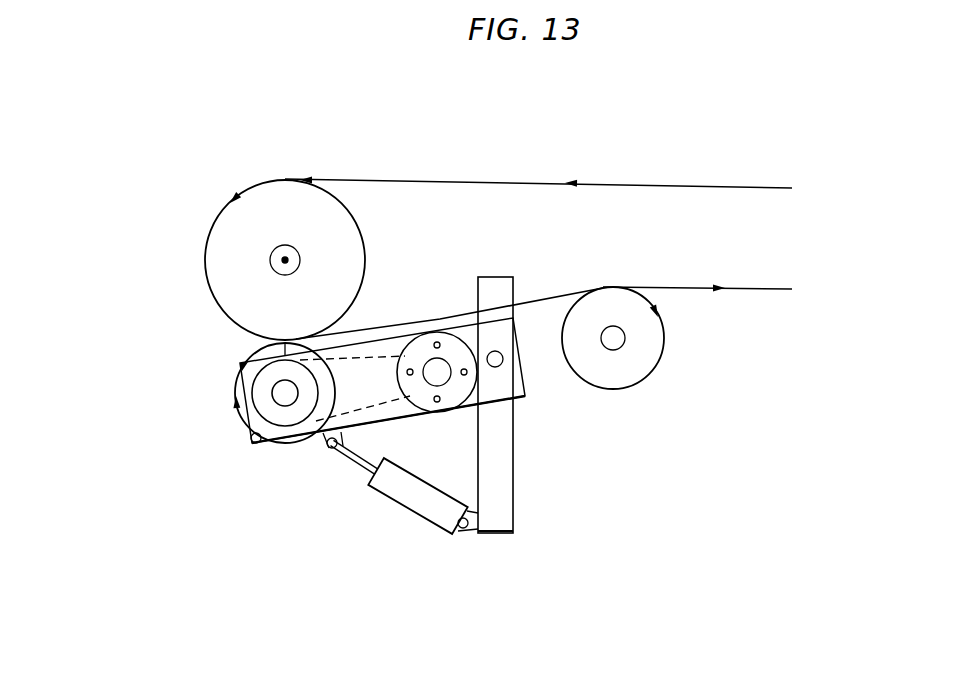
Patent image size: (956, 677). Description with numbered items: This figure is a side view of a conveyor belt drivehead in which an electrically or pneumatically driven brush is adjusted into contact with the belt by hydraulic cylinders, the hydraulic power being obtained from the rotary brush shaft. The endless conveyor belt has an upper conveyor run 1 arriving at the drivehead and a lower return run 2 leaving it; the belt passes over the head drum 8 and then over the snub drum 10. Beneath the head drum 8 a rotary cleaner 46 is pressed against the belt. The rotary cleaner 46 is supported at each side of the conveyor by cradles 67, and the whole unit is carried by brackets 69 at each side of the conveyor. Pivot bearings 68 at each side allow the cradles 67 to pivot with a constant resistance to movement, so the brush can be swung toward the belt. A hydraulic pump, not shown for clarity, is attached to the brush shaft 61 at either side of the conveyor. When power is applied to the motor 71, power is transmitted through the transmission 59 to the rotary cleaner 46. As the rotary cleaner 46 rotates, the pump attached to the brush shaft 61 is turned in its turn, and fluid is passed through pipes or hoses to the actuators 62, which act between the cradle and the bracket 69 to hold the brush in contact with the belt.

The upper conveyor run 1 is at (631, 178).
The lower return run 2 is at (755, 293).
The head drum 8 is at (205, 245).
The snub drum 10 is at (643, 373).
The rotary cleaner 46 is at (288, 448).
The transmission 59 is at (370, 352).
The brush shaft 61 is at (272, 391).
The actuators 62 is at (411, 512).
The cradles 67 is at (252, 440).
The pivot bearings 68 is at (501, 365).
The brackets 69 is at (515, 532).
The motor 71 is at (453, 331).